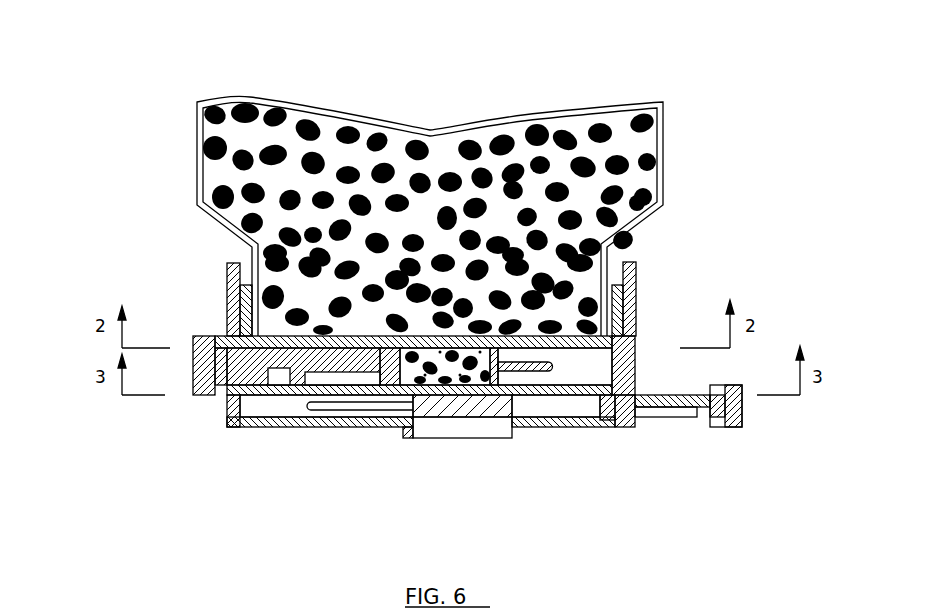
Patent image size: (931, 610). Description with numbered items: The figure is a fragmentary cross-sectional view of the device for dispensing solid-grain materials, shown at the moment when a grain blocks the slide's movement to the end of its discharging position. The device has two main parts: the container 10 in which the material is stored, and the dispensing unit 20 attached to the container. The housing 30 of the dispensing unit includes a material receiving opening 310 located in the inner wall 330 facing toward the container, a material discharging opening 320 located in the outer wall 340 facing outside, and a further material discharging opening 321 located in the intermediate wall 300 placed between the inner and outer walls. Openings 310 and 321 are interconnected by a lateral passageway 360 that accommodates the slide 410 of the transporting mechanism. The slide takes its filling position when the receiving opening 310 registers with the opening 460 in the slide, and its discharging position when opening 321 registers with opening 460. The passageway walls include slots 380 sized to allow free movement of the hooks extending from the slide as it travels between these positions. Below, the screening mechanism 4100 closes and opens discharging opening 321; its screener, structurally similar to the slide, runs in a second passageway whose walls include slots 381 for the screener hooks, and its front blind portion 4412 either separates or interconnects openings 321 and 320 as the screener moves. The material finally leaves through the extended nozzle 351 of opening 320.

The container 10 is at (663, 170).
The dispensing unit 20 is at (230, 270).
The housing 30 is at (633, 347).
The intermediate wall 300 is at (267, 390).
The material receiving opening 310 is at (385, 350).
The material discharging opening 320 is at (445, 428).
The material discharging opening 321 is at (457, 360).
The inner wall 330 is at (523, 362).
The outer wall 340 is at (307, 420).
The extended nozzle 351 is at (572, 458).
The lateral passageway 360 is at (582, 363).
The slot 380 is at (612, 297).
The slot 381 is at (367, 407).
The slide 410 is at (193, 353).
The screening mechanism 4100 is at (735, 412).
The front blind portion 4412 is at (487, 405).
The opening 460 is at (497, 358).